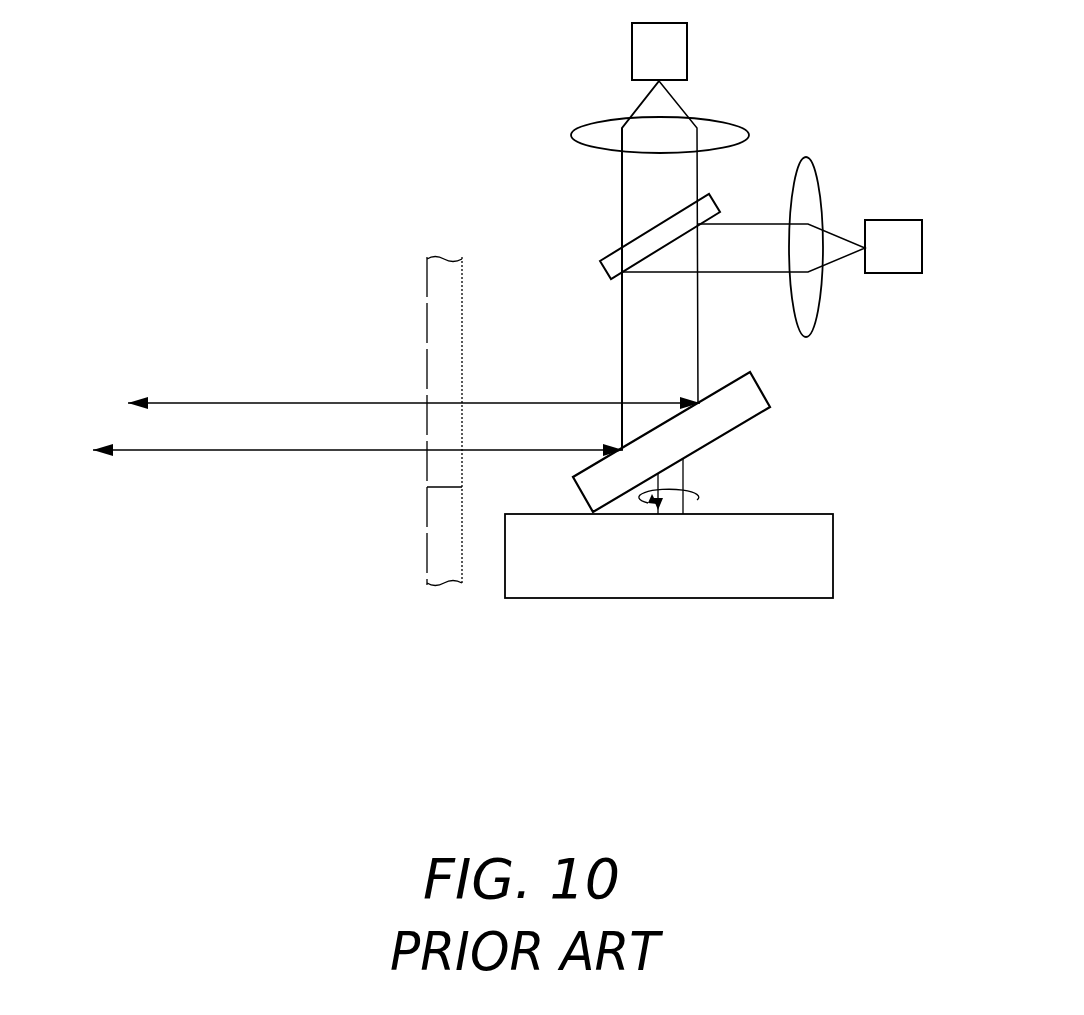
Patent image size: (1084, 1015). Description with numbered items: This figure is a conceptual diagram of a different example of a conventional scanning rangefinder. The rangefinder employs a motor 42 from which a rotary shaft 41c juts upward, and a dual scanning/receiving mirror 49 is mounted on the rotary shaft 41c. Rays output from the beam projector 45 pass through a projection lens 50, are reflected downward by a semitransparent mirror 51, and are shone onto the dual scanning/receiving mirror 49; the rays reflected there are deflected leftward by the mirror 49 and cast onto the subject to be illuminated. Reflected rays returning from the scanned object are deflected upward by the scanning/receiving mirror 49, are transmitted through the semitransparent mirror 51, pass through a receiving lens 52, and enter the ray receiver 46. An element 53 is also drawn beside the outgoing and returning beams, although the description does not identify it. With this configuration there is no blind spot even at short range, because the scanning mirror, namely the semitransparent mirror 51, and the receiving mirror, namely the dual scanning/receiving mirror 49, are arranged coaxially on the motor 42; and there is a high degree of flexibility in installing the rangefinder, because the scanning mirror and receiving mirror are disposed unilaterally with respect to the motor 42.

The ray receiver 46 is at (688, 47).
The receiving lens 52 is at (580, 126).
The semitransparent mirror 51 is at (612, 253).
The projection lens 50 is at (806, 158).
The beam projector 45 is at (893, 220).
The dual scanning/receiving mirror 49 is at (757, 382).
The rotary shaft 41c is at (685, 465).
The motor 42 is at (834, 553).
The scale plate 53 is at (427, 470).